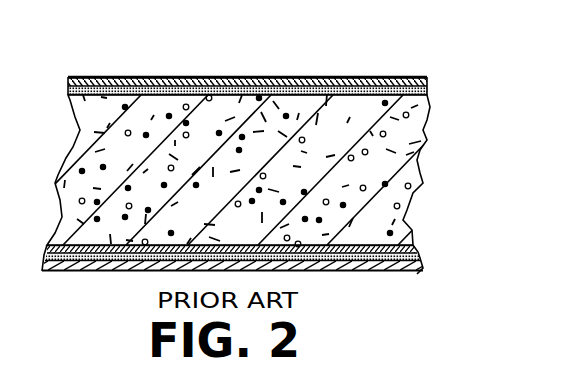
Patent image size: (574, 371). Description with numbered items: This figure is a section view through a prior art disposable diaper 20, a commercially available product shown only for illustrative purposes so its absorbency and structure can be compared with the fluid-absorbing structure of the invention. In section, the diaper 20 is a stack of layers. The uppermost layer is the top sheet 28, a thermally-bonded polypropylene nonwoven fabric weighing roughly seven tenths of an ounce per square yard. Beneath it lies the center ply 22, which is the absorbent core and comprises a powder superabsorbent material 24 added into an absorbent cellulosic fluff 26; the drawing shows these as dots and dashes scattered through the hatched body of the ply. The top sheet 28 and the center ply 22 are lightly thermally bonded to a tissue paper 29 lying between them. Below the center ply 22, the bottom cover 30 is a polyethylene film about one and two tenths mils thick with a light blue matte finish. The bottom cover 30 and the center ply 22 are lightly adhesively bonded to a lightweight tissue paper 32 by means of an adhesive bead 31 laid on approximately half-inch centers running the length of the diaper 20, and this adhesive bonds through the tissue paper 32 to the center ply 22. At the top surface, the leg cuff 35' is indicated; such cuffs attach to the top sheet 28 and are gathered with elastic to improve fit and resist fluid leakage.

The disposable diaper 20 is at (504, 180).
The center ply 22 is at (425, 150).
The powder superabsorbent material 24 is at (420, 133).
The absorbent cellulosic fluff 26 is at (405, 187).
The top sheet 28 is at (382, 79).
The tissue paper 29 is at (428, 96).
The bottom cover 30 is at (417, 272).
The adhesive bead 31 is at (418, 256).
The lightweight tissue paper 32 is at (417, 247).
The leg cuff 35' is at (247, 62).